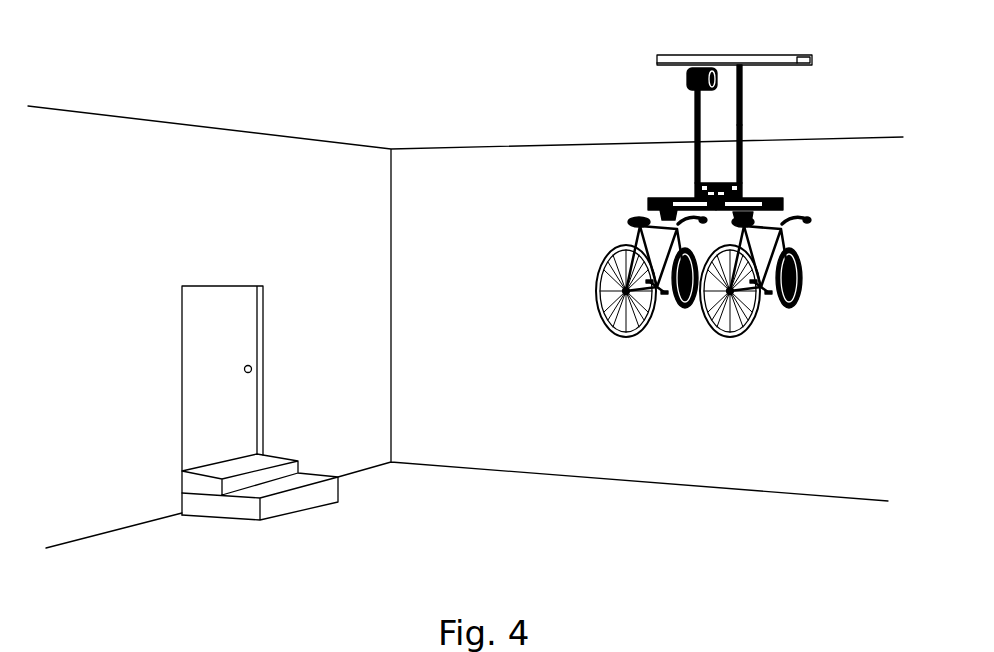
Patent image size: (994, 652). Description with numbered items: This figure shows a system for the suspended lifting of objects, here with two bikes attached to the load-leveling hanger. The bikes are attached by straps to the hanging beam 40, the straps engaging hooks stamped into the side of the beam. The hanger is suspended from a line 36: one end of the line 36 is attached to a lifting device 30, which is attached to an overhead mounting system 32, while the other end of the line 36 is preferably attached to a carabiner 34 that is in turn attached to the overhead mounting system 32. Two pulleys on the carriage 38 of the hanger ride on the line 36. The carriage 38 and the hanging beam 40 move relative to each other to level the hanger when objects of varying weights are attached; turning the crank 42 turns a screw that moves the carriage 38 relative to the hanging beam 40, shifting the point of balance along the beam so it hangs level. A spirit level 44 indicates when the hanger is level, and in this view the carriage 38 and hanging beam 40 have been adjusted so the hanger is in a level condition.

The lifting device 30 is at (658, 72).
The overhead mounting system 32 is at (777, 55).
The carabiner 34 is at (745, 72).
The line 36 is at (747, 150).
The carriage 38 is at (693, 183).
The hanging beam 40 is at (753, 197).
The crank 42 is at (637, 190).
The spirit level 44 is at (721, 183).